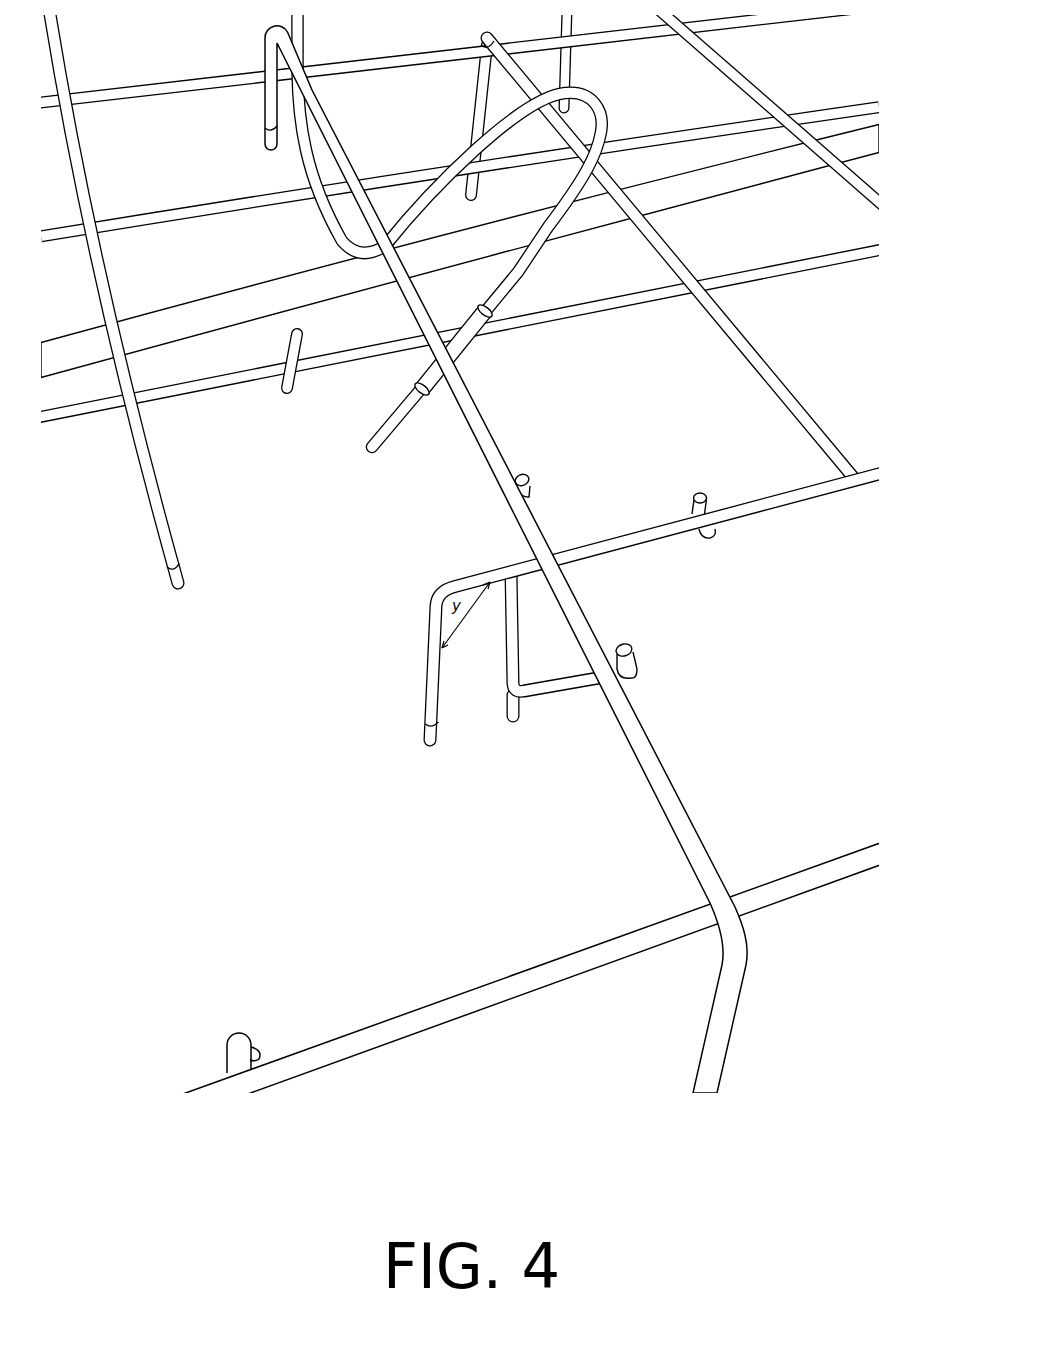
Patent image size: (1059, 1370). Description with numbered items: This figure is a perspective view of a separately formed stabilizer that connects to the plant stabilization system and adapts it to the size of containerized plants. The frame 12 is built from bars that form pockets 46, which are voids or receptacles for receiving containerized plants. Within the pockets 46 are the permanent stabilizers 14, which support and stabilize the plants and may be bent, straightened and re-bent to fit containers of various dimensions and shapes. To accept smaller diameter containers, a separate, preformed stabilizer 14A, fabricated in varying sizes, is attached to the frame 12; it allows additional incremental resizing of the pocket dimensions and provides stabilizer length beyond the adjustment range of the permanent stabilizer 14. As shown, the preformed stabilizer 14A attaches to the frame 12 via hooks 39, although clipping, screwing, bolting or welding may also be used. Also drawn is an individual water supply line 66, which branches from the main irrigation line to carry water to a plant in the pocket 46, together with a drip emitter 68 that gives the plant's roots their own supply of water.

The frame 12 is at (489, 438).
The stabilizer 14 is at (156, 480).
The preformed stabilizer 14A is at (428, 622).
The hooks 39 is at (531, 483).
The pocket 46 is at (291, 346).
The individual water supply line 66 is at (607, 136).
The drip emitter 68 is at (425, 374).